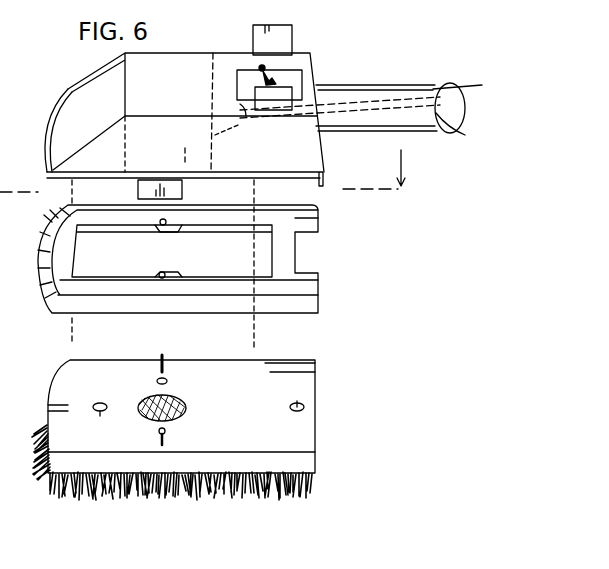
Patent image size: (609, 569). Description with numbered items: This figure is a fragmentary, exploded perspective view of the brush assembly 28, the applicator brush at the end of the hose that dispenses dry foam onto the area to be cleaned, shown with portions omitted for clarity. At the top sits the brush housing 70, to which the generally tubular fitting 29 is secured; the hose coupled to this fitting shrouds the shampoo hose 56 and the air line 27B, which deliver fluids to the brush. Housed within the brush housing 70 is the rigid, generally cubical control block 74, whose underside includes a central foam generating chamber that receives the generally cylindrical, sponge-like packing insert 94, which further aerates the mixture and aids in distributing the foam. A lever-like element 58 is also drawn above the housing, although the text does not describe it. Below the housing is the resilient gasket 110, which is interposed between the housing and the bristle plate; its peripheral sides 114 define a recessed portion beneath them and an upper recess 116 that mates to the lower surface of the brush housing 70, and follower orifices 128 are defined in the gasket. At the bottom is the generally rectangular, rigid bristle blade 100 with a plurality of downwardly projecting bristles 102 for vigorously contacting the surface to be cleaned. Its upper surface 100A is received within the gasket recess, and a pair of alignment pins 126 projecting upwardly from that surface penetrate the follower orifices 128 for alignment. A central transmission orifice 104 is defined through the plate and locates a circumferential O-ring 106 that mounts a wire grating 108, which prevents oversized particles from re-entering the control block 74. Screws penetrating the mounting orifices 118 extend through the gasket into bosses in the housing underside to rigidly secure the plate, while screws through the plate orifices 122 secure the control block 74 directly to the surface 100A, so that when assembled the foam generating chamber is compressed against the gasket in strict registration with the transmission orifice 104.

The brush housing 70 is at (180, 63).
The lever 58 is at (267, 72).
The tubular fitting 29 is at (350, 90).
The shampoo hose 56 is at (230, 101).
The air line 27B is at (247, 128).
The packing insert 94 is at (138, 191).
The control block 74 is at (185, 176).
The resilient gasket 110 is at (324, 289).
The upper recess 116 is at (200, 272).
The follower orifices 128 is at (161, 272).
The peripheral sides 114 is at (271, 305).
The bristle blade 100 is at (313, 437).
The upper surface 100A is at (249, 435).
The bristles 102 is at (47, 462).
The transmission orifice 104 is at (187, 404).
The O-ring 106 is at (148, 402).
The wire grating 108 is at (164, 396).
The mounting orifices 118 is at (103, 412).
The alignment pins 126 is at (163, 355).
The plate orifices 122 is at (159, 433).
The applicator brush 28 is at (171, 550).